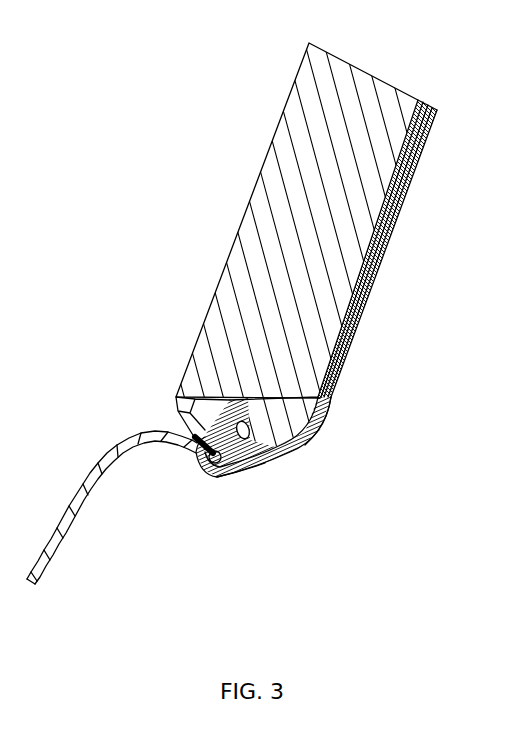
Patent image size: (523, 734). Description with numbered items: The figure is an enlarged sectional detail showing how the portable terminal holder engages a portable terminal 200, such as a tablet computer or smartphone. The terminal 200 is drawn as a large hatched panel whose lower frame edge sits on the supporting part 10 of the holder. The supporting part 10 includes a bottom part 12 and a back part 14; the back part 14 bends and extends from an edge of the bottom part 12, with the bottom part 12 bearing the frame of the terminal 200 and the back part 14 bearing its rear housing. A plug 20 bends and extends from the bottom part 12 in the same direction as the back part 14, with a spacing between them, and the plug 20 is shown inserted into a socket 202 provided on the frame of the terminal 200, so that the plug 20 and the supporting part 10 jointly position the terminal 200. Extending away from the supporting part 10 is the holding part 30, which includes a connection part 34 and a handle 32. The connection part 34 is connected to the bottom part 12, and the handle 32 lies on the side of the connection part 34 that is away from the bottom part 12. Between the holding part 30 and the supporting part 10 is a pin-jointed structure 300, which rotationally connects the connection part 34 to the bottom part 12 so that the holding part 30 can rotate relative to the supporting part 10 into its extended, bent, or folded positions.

The portable terminal 200 is at (305, 168).
The socket 202 is at (209, 412).
The pin-jointed structure 300 is at (194, 438).
The plug 20 is at (317, 395).
The supporting part 10 is at (388, 430).
The back part 14 is at (310, 435).
The bottom part 12 is at (240, 463).
The holding part 30 is at (352, 537).
The connection part 34 is at (172, 447).
The handle 32 is at (84, 502).